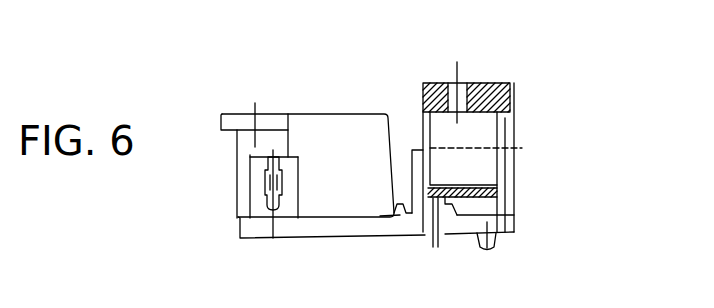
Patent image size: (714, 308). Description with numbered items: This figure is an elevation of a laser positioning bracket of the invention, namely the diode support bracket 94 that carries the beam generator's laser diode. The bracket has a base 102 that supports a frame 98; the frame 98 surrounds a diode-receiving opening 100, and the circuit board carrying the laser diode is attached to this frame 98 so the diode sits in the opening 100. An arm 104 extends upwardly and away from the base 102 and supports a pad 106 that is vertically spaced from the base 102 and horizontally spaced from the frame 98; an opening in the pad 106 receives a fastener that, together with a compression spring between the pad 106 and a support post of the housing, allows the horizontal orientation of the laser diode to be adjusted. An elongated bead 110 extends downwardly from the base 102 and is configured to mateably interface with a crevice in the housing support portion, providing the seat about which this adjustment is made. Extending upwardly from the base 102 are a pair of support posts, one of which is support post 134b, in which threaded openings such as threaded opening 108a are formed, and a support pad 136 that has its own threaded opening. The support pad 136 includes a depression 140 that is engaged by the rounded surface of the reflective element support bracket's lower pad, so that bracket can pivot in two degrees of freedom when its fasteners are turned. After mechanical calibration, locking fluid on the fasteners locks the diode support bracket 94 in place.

The diode support bracket 94 is at (398, 63).
The frame 98 is at (515, 149).
The diode-receiving opening 100 is at (525, 151).
The base 102 is at (362, 250).
The arm 104 is at (308, 143).
The pad 106 is at (210, 100).
The threaded opening 108a is at (196, 170).
The elongated bead 110 is at (539, 248).
The support post 134b is at (333, 122).
The support pad 136 is at (340, 256).
The depression 140 is at (492, 251).